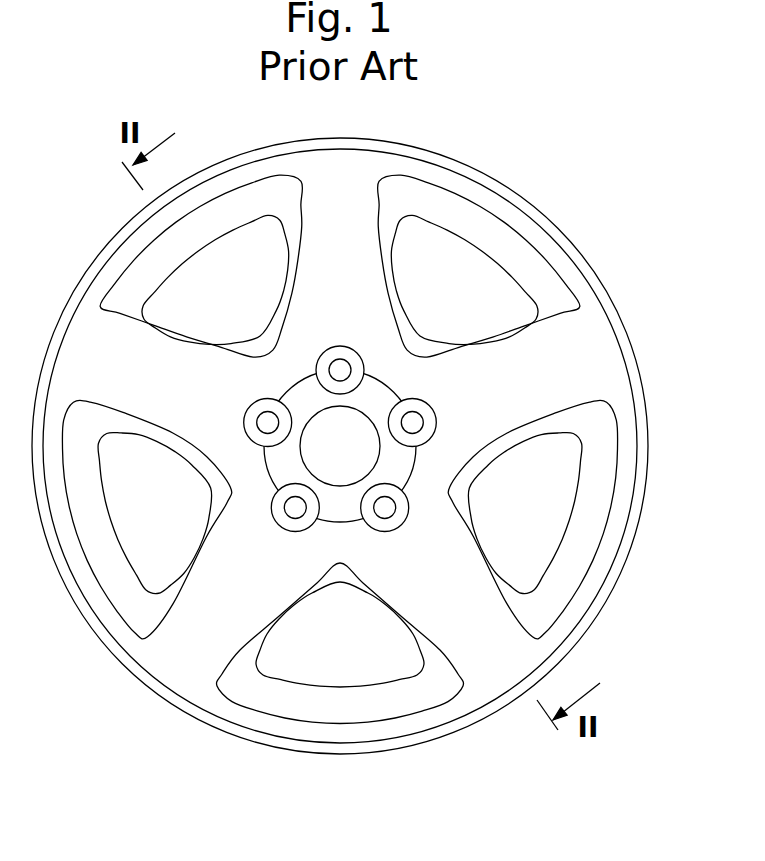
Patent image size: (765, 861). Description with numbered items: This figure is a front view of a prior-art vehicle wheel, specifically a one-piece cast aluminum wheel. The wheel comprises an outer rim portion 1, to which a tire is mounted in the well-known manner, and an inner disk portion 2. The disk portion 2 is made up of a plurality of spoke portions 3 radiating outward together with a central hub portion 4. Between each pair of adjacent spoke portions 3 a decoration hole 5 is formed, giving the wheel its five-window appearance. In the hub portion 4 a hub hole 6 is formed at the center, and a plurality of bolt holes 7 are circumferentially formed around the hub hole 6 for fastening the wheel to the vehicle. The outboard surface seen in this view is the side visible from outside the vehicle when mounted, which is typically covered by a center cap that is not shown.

The rim portion 1 is at (572, 244).
The disk portion 2 is at (677, 298).
The spoke portions 3 is at (567, 355).
The hub portion 4 is at (400, 461).
The decoration hole 5 is at (490, 265).
The hub hole 6 is at (373, 467).
The bolt holes 7 is at (420, 420).